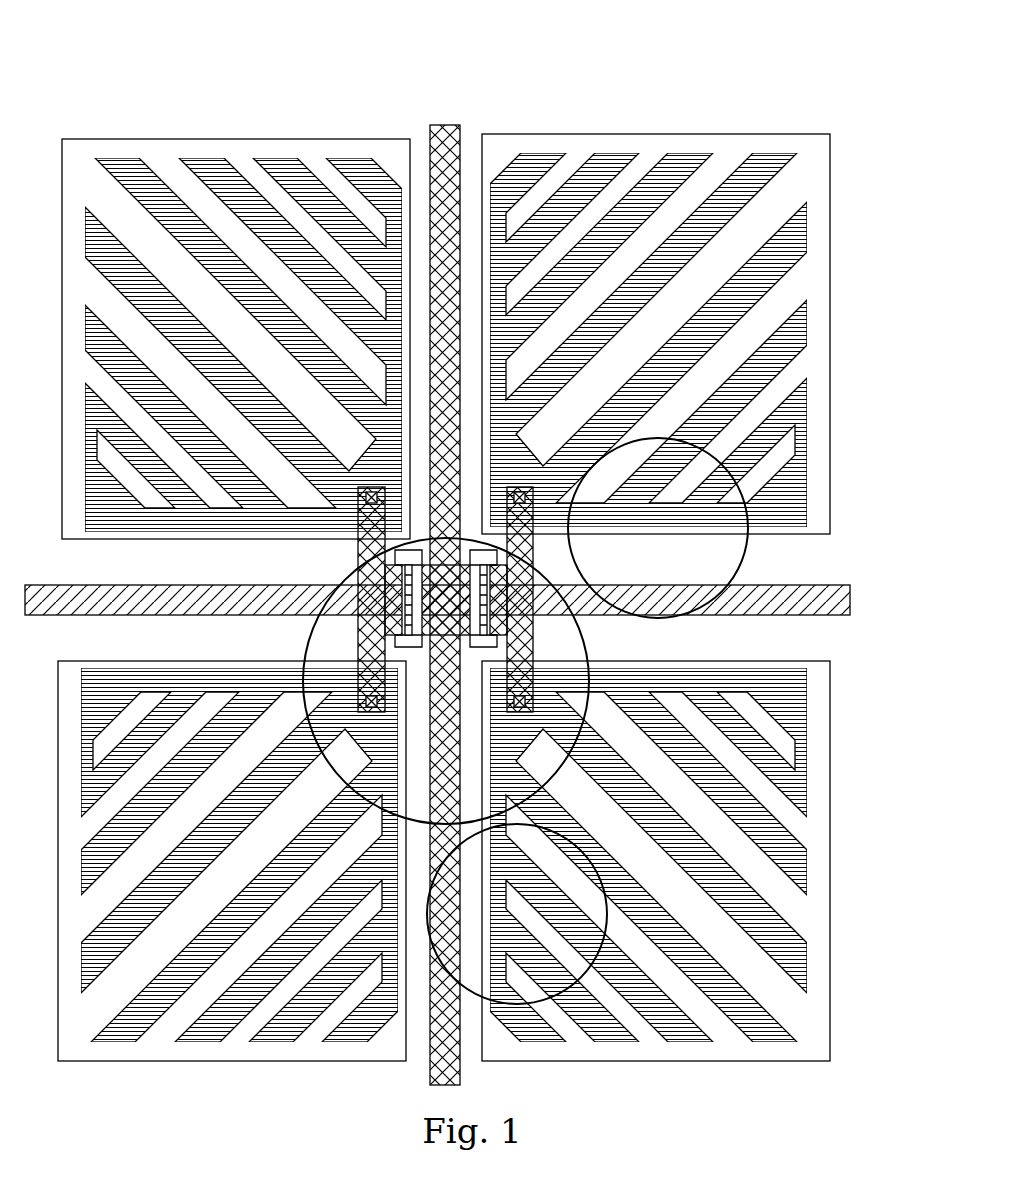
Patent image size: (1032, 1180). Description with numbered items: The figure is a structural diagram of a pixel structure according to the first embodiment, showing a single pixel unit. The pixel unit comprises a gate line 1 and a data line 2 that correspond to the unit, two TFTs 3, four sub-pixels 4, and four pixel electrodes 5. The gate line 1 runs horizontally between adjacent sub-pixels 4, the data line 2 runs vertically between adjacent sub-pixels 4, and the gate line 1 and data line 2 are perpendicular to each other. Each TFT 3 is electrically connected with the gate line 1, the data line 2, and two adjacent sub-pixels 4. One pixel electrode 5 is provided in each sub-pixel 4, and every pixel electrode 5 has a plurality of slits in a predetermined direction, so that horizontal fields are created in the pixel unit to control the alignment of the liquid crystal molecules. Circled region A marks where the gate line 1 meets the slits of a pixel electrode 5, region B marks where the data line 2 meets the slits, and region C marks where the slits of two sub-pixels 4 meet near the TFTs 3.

The gate line 1 is at (467, 527).
The data line 2 is at (546, 548).
The TFT 3 is at (585, 361).
The sub-pixel 4 is at (446, 276).
The pixel electrode 5 is at (484, 585).
The region A is at (739, 405).
The region B is at (668, 643).
The region C is at (525, 417).